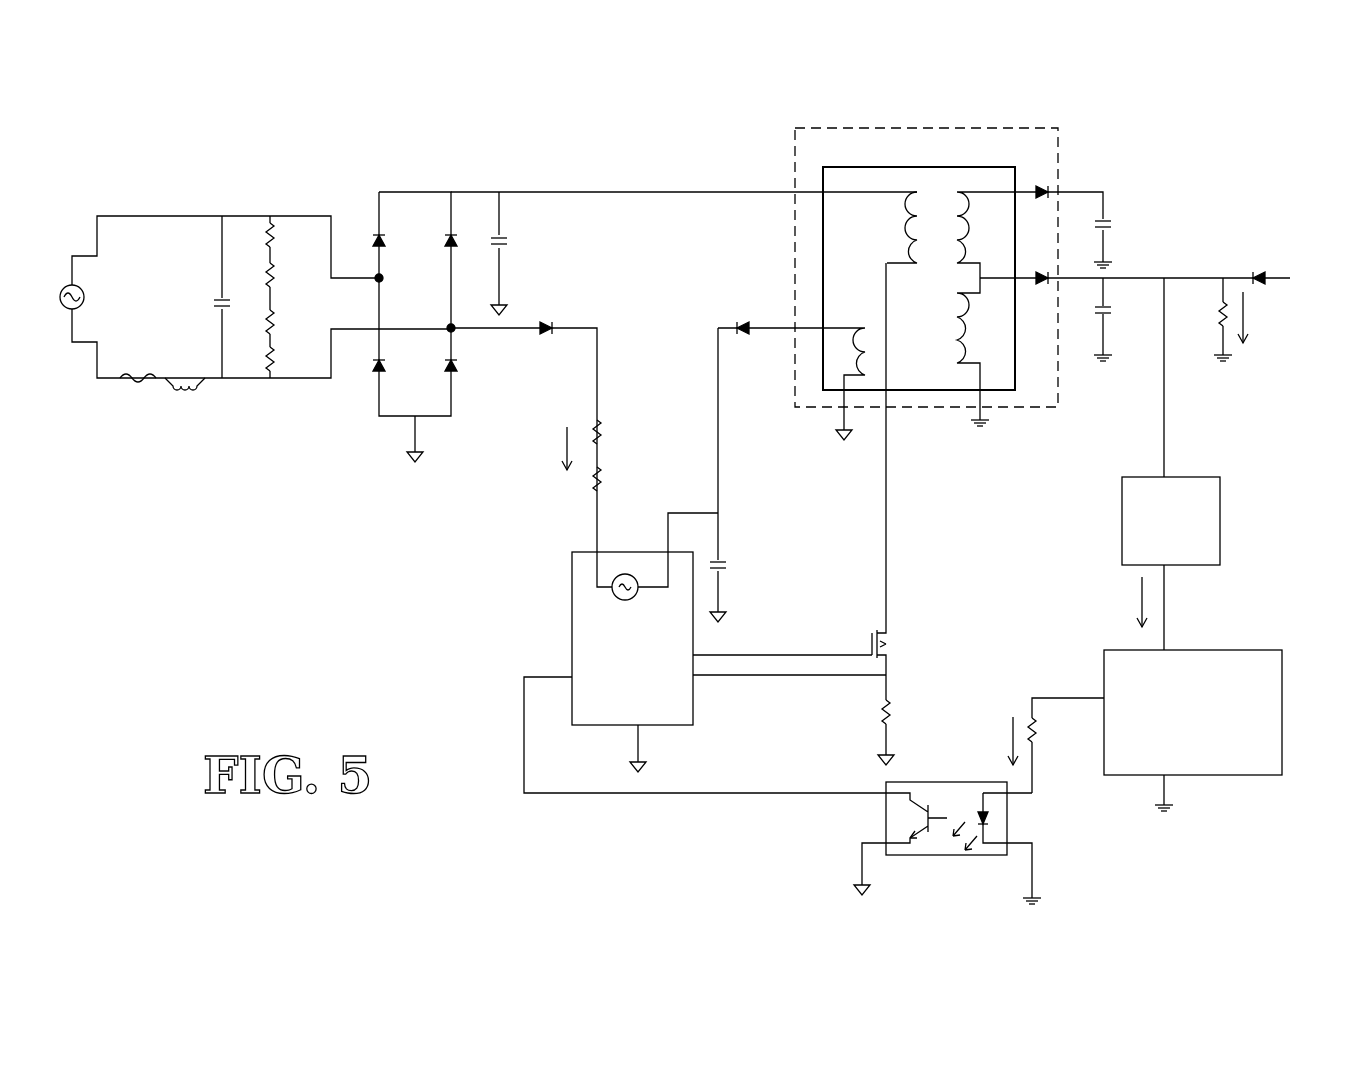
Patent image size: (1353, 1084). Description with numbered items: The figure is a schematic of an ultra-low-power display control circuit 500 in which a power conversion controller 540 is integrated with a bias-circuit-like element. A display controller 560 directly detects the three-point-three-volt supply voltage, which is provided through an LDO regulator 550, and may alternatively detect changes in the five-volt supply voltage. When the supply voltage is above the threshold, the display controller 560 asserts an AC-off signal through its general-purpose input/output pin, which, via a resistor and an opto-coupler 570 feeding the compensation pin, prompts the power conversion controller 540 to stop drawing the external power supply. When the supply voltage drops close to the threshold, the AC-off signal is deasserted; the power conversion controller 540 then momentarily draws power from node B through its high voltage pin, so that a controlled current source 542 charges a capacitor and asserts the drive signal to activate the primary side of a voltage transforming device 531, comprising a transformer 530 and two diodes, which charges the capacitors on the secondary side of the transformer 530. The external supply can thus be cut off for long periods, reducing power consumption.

The ultra-low-power display control circuit 500 is at (1260, 181).
The transformer 530 is at (890, 167).
The voltage transforming device 531 is at (793, 180).
The power conversion controller 540 is at (572, 598).
The controlled current source 542 is at (628, 598).
The LDO regulator 550 is at (1119, 525).
The display controller 560 is at (1101, 667).
The opto-coupler 570 is at (985, 782).